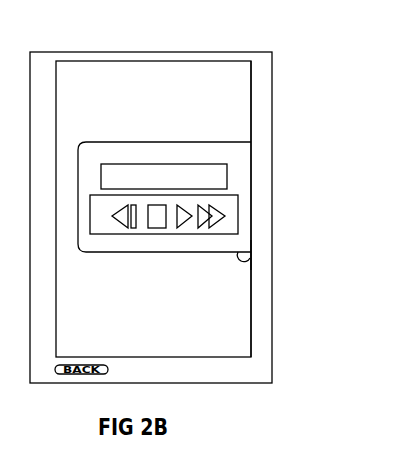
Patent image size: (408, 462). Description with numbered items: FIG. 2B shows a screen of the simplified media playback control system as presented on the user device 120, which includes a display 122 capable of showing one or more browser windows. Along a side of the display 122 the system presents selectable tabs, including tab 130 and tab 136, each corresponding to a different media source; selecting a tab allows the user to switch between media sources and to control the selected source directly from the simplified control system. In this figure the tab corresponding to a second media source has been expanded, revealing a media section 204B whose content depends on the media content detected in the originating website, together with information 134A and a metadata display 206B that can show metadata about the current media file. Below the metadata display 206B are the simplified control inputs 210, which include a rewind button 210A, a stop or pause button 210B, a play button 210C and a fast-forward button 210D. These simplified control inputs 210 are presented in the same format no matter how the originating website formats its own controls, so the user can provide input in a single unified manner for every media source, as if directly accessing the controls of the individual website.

The user device 120 is at (195, 51).
The display 122 is at (85, 60).
The tab 130 is at (251, 256).
The information 134A is at (251, 177).
The tab 136 is at (236, 142).
The media section 204B is at (148, 142).
The metadata display 206B is at (123, 164).
The simplified control inputs 210 is at (194, 245).
The rewind button 210A is at (121, 221).
The stop or pause button 210B is at (160, 222).
The play button 210C is at (184, 213).
The fast-forward button 210D is at (205, 213).